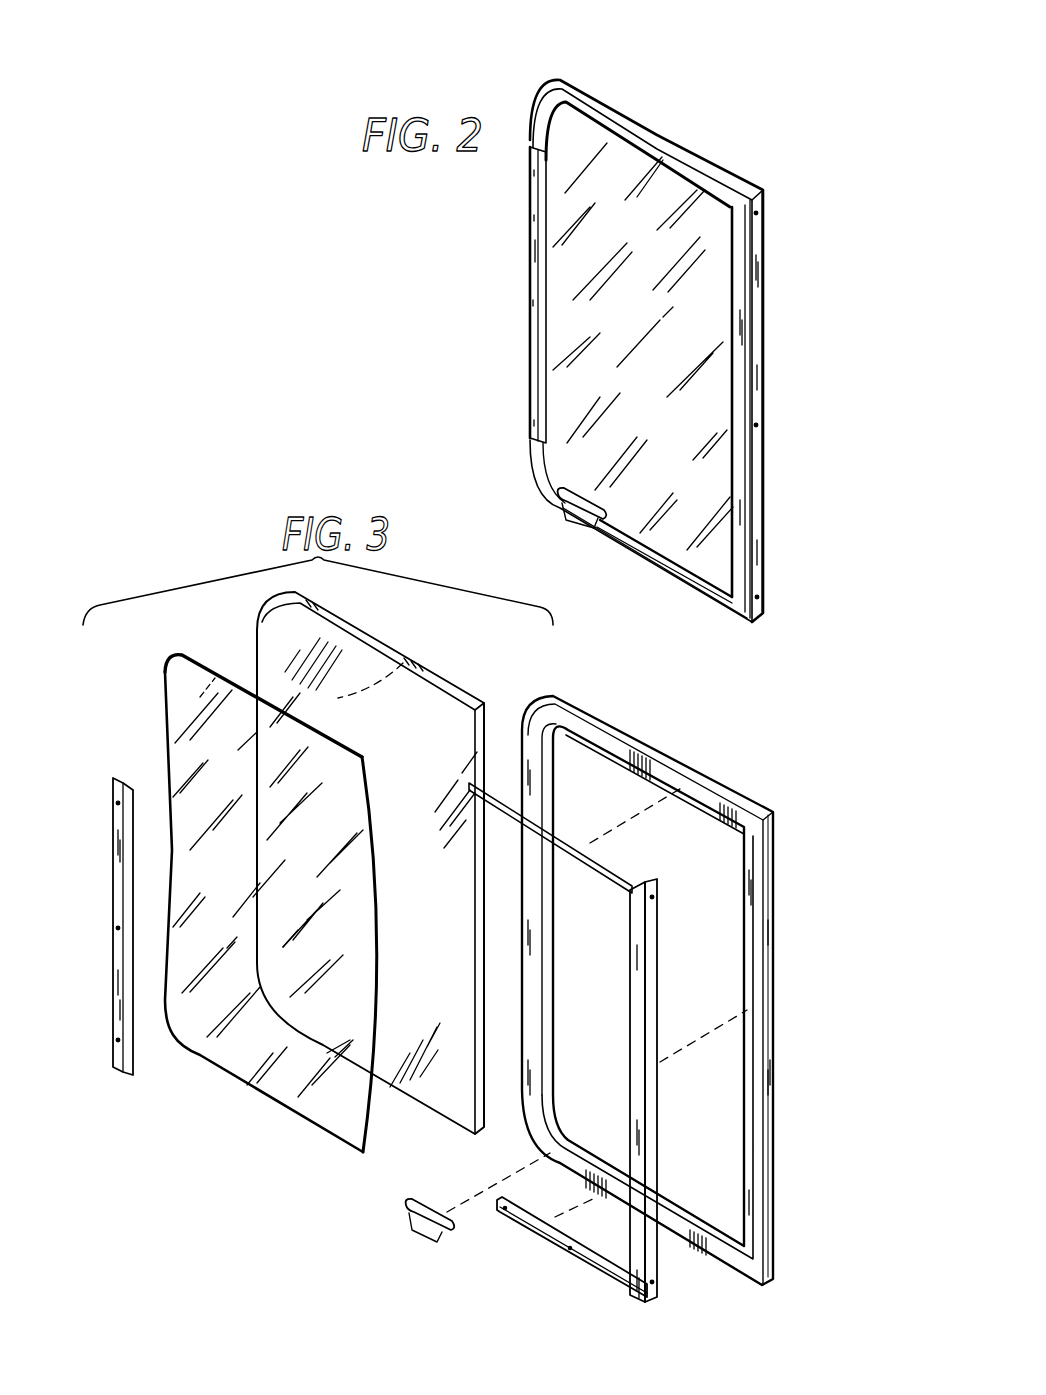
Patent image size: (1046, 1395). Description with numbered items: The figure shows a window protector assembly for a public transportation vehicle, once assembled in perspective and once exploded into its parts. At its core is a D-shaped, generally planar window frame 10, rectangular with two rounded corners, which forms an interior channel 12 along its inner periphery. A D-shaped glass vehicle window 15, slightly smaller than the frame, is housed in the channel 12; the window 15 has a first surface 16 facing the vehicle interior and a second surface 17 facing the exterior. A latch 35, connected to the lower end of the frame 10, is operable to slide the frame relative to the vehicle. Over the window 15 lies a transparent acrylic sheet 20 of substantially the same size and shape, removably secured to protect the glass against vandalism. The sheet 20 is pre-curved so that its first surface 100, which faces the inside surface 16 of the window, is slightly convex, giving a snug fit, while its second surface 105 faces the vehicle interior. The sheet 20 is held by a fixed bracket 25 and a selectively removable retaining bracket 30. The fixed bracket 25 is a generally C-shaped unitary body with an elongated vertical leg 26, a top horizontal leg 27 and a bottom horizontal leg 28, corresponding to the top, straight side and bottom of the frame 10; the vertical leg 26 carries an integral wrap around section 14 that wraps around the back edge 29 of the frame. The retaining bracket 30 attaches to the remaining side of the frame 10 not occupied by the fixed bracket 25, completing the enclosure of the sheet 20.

In FIG. 2, the window frame 10 is at (642, 117).
In FIG. 3, the window frame 10 is at (733, 790).
In FIG. 3, the interior channel 12 is at (705, 1213).
In FIG. 3, the wrap around section 14 is at (655, 997).
In FIG. 3, the vehicle window 15 is at (452, 688).
In FIG. 3, the first surface 16 is at (287, 627).
In FIG. 3, the second surface 17 is at (403, 663).
In FIG. 2, the transparent sheet 20 is at (572, 143).
In FIG. 3, the transparent sheet 20 is at (167, 680).
In FIG. 2, the fixed bracket 25 is at (742, 360).
In FIG. 3, the fixed bracket 25 is at (646, 880).
In FIG. 3, the vertical leg 26 is at (637, 1143).
In FIG. 3, the top horizontal leg 27 is at (561, 838).
In FIG. 3, the bottom horizontal leg 28 is at (580, 1257).
In FIG. 3, the back edge 29 is at (768, 910).
In FIG. 2, the retaining bracket 30 is at (530, 345).
In FIG. 3, the retaining bracket 30 is at (118, 1015).
In FIG. 2, the latch 35 is at (560, 515).
In FIG. 3, the latch 35 is at (433, 1242).
In FIG. 3, the first surface 100 is at (140, 603).
In FIG. 3, the second surface 105 is at (207, 750).